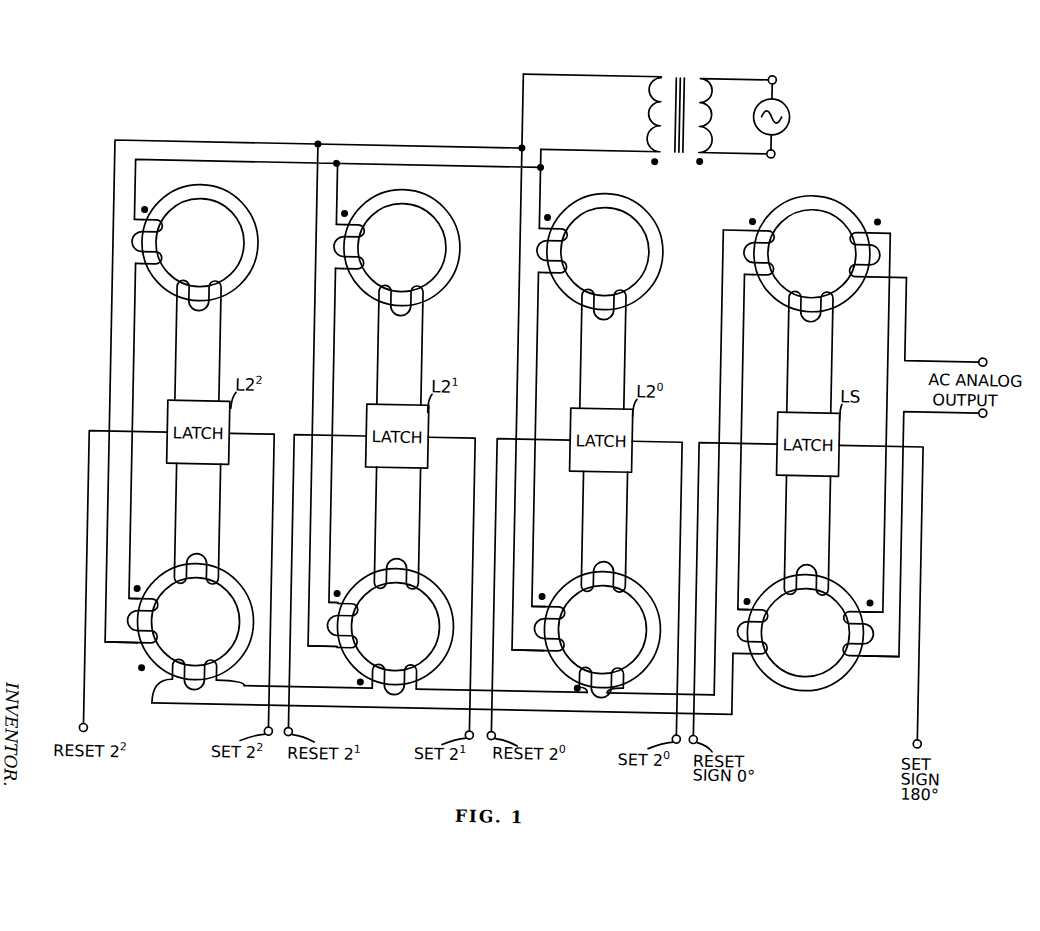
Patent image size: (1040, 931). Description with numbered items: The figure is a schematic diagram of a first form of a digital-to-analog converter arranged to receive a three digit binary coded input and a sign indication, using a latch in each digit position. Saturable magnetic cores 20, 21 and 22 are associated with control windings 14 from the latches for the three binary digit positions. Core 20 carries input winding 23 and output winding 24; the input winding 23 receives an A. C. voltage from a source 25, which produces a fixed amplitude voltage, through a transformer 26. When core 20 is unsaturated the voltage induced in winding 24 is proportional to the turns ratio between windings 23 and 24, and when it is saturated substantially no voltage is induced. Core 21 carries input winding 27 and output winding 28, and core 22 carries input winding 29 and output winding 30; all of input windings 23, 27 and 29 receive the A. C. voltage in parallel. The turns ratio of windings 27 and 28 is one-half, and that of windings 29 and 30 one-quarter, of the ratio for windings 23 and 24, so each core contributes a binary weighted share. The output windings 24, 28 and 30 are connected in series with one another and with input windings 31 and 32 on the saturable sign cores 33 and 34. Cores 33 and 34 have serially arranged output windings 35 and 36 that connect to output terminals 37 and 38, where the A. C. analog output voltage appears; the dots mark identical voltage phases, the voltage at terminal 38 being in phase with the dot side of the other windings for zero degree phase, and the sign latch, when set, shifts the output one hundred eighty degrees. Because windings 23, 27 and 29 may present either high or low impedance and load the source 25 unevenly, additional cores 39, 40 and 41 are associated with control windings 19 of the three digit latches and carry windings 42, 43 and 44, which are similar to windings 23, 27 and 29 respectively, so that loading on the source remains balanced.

The control winding 14 is at (211, 581).
The control winding 19 is at (191, 281).
The saturable magnetic core 20 is at (656, 589).
The saturable magnetic core 21 is at (446, 590).
The saturable magnetic core 22 is at (249, 589).
The input winding 23 is at (567, 611).
The output winding 24 is at (610, 660).
The source 25 is at (786, 96).
The transformer 26 is at (677, 62).
The input winding 27 is at (360, 612).
The output winding 28 is at (387, 659).
The input winding 29 is at (165, 612).
The output winding 30 is at (195, 657).
The input winding 31 is at (772, 609).
The input winding 32 is at (772, 232).
The saturable magnetic core 33 is at (859, 588).
The saturable magnetic core 34 is at (863, 208).
The output winding 35 is at (841, 617).
The output winding 36 is at (852, 250).
The output terminal 37 is at (990, 341).
The output terminal 38 is at (991, 399).
The core 39 is at (656, 210).
The core 40 is at (453, 210).
The core 41 is at (251, 209).
The winding 42 is at (569, 232).
The winding 43 is at (364, 231).
The winding 44 is at (167, 231).